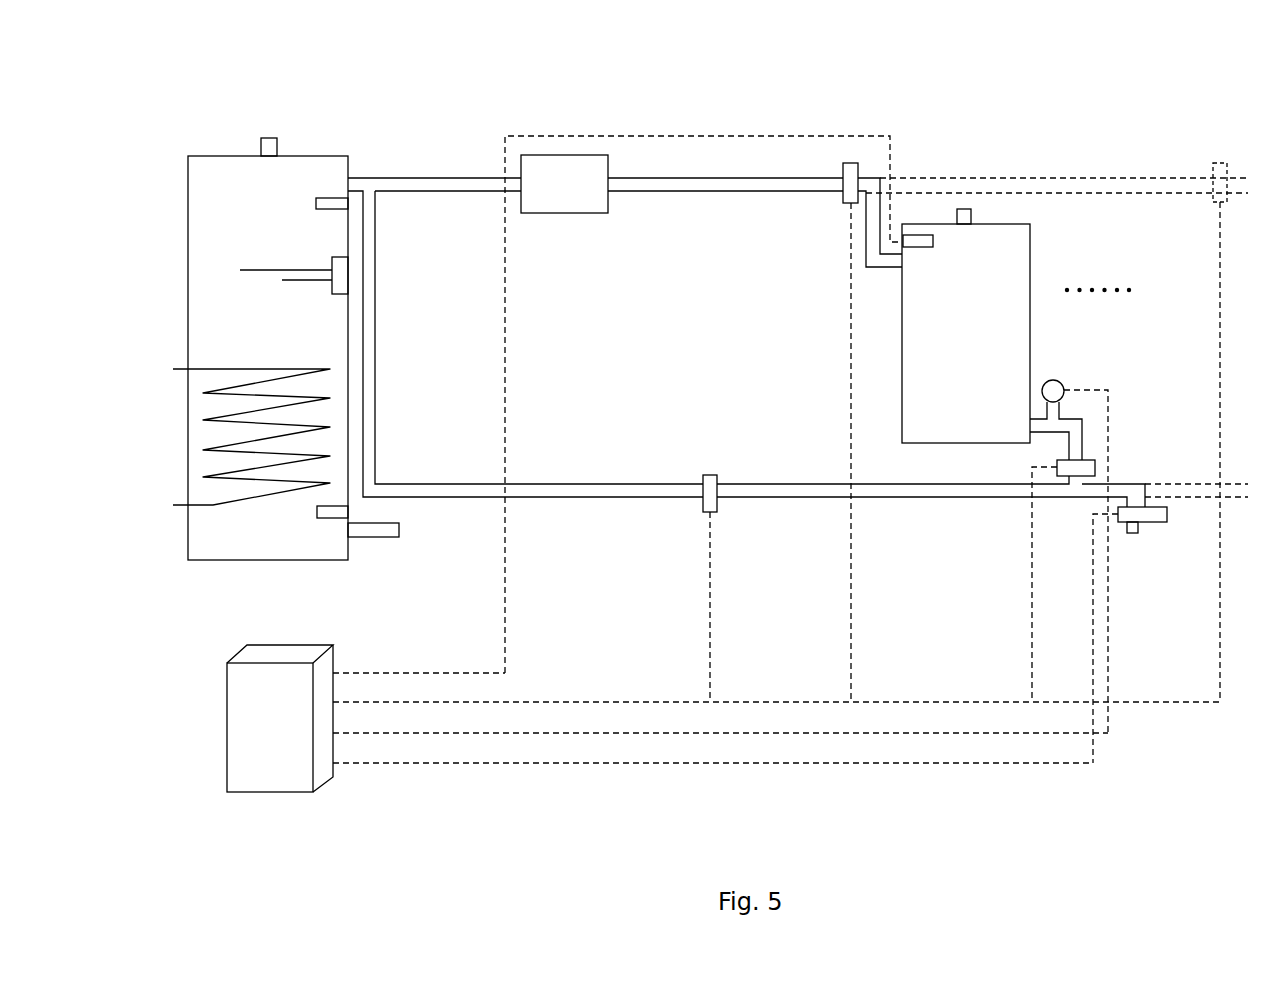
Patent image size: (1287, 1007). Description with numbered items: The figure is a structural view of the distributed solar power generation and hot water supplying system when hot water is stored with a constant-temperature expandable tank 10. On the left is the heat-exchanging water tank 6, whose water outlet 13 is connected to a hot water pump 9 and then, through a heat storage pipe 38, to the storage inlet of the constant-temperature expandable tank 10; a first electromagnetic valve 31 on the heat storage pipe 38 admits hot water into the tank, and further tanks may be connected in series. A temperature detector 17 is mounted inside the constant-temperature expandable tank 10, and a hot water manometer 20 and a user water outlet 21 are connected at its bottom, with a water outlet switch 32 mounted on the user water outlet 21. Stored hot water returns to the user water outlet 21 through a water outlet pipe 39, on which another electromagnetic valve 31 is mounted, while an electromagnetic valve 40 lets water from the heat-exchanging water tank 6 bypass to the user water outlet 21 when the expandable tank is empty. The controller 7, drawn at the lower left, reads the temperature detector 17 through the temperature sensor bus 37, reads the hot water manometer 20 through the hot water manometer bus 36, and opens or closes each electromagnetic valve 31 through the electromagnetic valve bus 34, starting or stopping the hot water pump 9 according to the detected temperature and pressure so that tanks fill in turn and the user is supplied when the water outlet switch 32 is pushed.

The heat-exchanging water tank 6 is at (312, 166).
The controller 7 is at (277, 773).
The hot water pump 9 is at (578, 165).
The constant-temperature expandable tank 10 is at (1008, 240).
The water outlet 13 is at (370, 188).
The temperature detector 17 is at (908, 236).
The hot water manometer 20 is at (1055, 385).
The user water outlet 21 is at (1133, 528).
The electromagnetic valve 31 is at (849, 183).
The water outlet switch 32 is at (1158, 521).
The electromagnetic valve bus 34 is at (549, 701).
The hot water manometer bus 36 is at (773, 732).
The temperature sensor bus 37 is at (504, 410).
The heat storage pipe 38 is at (763, 182).
The water outlet pipe 39 is at (794, 486).
The electromagnetic valve 40 is at (707, 499).